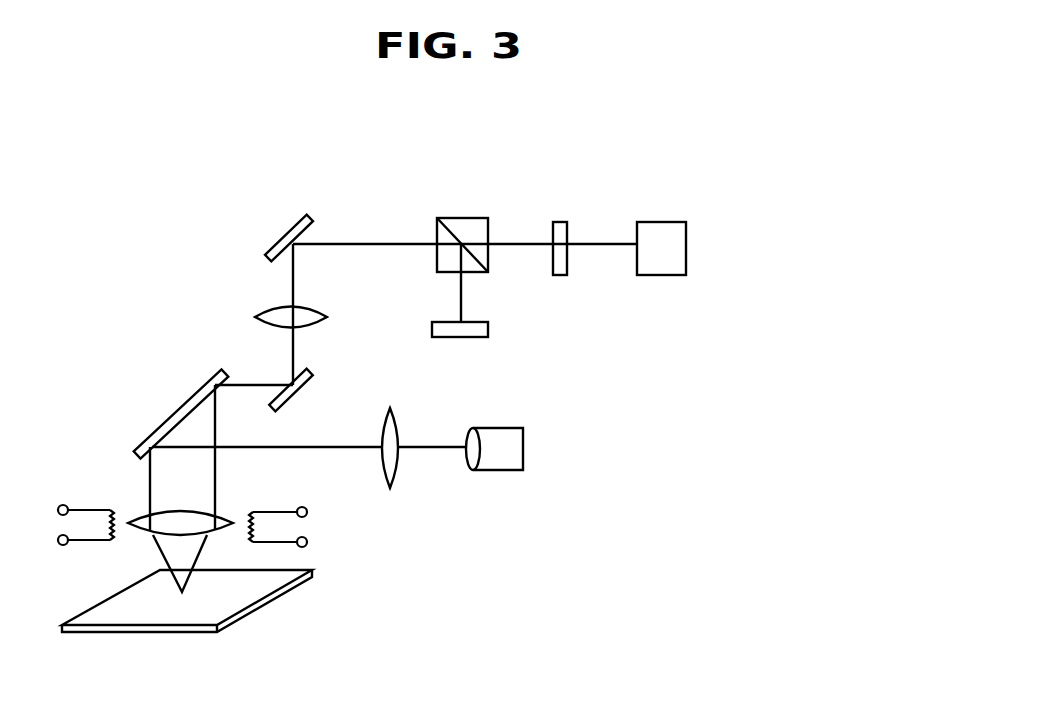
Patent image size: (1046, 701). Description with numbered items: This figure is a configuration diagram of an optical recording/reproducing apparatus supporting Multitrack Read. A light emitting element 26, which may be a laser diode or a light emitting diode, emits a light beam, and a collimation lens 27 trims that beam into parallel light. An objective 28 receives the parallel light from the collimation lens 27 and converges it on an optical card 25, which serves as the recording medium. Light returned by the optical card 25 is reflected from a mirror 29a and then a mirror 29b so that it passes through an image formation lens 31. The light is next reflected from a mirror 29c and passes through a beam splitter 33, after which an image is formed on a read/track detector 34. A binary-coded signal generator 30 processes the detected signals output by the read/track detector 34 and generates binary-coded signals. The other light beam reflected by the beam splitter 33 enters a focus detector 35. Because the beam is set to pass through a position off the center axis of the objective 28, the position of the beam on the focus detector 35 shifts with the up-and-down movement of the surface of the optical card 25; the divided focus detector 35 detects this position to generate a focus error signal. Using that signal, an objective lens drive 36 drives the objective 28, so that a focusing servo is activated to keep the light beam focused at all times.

The optical card 25 is at (270, 603).
The light emitting element 26 is at (523, 457).
The collimation lens 27 is at (398, 467).
The objective 28 is at (220, 517).
The mirror 29a is at (153, 437).
The mirror 29b is at (308, 383).
The mirror 29c is at (283, 237).
The binary-coded signal generator 30 is at (678, 222).
The image formation lens 31 is at (270, 311).
The beam splitter 33 is at (437, 218).
The read/track detector 34 is at (552, 262).
The focus detector 35 is at (477, 337).
The objective lens drive 36 is at (100, 543).